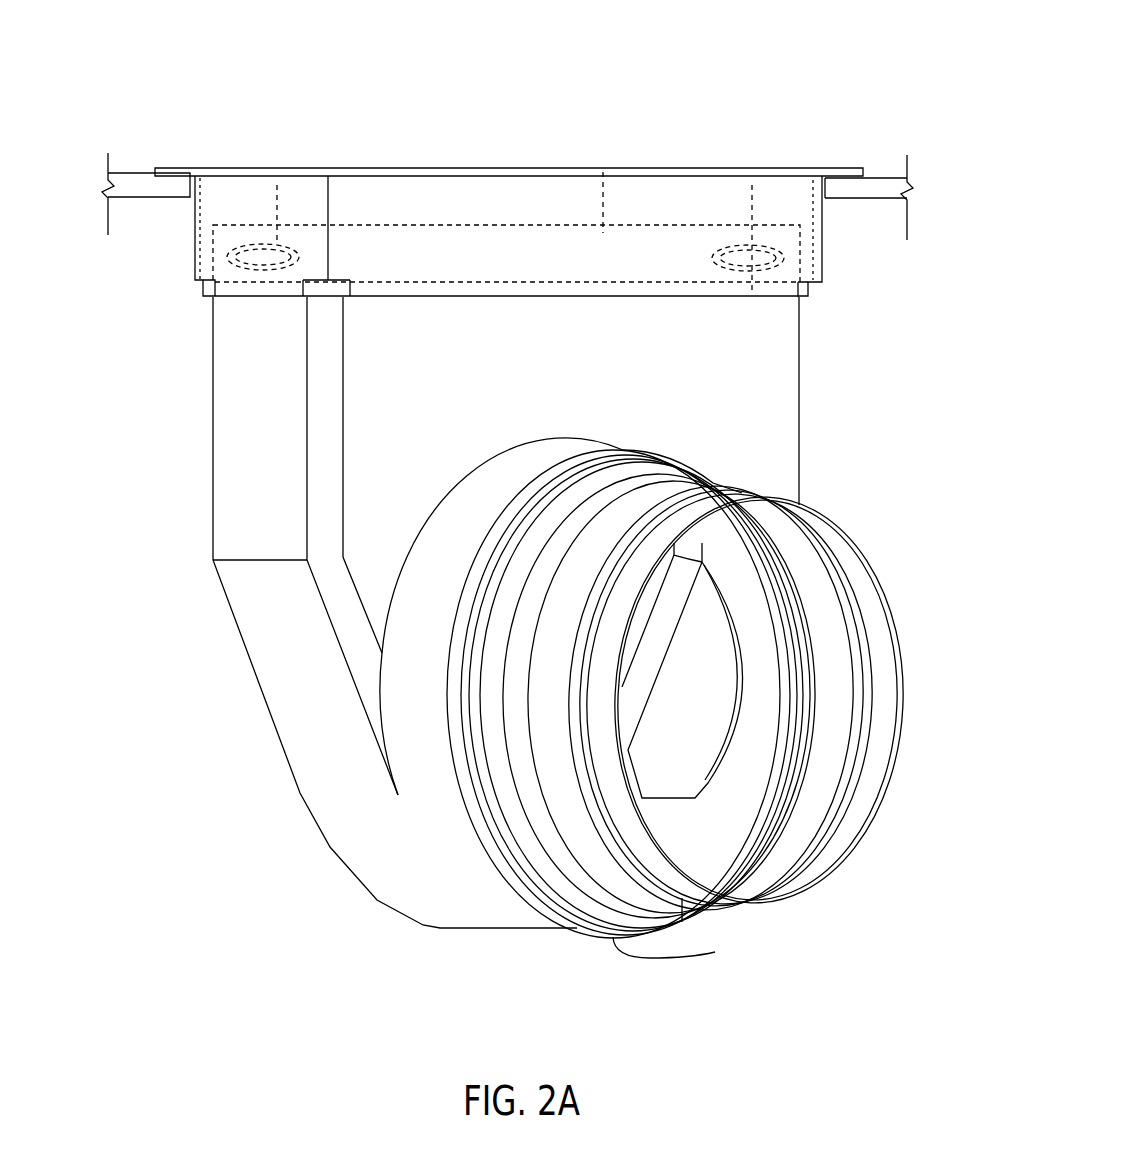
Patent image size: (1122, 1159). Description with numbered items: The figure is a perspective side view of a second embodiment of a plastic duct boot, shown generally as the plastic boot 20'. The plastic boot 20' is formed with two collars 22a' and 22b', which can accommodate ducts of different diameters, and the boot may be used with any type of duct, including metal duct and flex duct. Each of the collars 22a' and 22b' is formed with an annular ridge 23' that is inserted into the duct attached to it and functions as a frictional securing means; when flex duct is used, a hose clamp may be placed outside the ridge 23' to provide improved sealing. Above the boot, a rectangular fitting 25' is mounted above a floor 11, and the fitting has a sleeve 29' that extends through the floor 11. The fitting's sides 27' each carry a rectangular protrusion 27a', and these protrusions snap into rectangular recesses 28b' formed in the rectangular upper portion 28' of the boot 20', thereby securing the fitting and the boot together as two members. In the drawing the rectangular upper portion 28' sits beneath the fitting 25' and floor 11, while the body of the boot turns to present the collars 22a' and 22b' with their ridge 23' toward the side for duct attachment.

The plastic boot 20' is at (508, 488).
The floor 11 is at (141, 172).
The rectangular fitting 25' is at (509, 148).
The sides 27' is at (539, 236).
The rectangular protrusion 27a' is at (499, 291).
The rectangular recesses 28b' is at (545, 213).
The sleeve 29' is at (581, 178).
The rectangular upper portion 28' is at (543, 612).
The collar 22b' is at (611, 688).
The collar 22a' is at (736, 698).
The annular ridge 23' is at (682, 933).